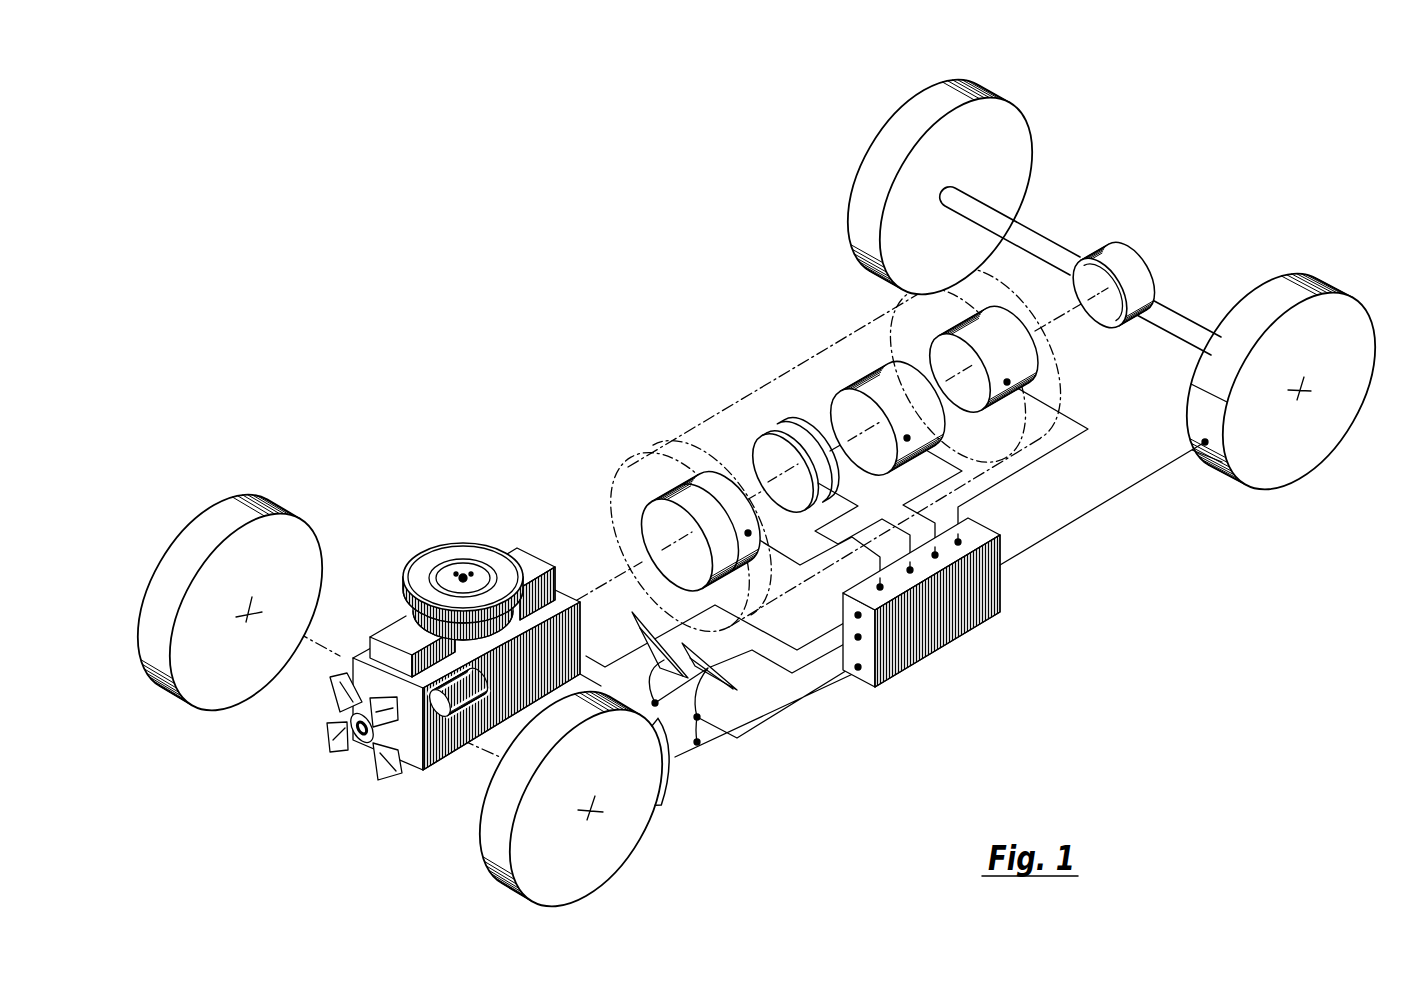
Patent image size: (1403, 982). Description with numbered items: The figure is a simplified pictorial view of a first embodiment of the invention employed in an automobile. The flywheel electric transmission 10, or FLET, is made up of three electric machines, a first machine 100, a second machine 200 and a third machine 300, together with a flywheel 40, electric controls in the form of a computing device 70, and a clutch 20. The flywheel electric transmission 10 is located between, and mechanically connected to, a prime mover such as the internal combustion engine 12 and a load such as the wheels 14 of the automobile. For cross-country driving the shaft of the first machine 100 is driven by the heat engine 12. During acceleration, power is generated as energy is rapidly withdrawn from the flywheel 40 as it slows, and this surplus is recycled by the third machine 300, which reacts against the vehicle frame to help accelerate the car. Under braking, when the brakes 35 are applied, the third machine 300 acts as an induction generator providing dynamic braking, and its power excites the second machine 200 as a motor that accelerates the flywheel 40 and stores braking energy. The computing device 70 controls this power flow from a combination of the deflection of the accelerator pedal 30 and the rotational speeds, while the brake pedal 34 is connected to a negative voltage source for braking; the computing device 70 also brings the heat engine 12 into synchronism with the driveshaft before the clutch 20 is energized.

The flywheel electric transmission 10 is at (702, 348).
The internal combustion engine 12 is at (420, 541).
The wheels 14 is at (1263, 298).
The clutch 20 is at (770, 433).
The accelerator pedal 30 is at (642, 618).
The brake pedal 34 is at (738, 690).
The brakes 35 is at (1185, 407).
The flywheel 40 is at (700, 452).
The computing device 70 is at (940, 656).
The first machine 100 is at (624, 488).
The second machine 200 is at (853, 378).
The third machine 300 is at (943, 320).